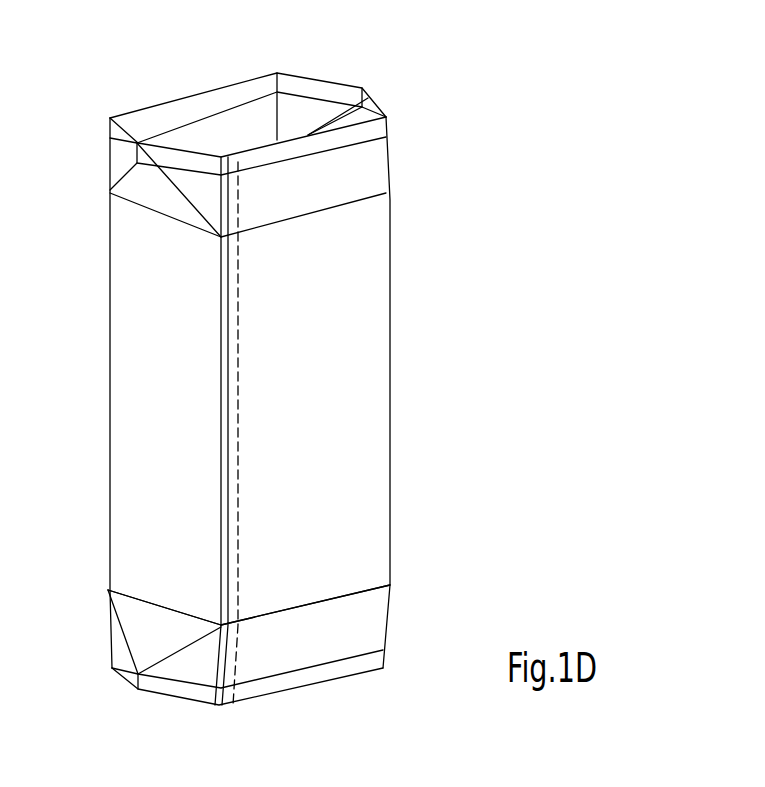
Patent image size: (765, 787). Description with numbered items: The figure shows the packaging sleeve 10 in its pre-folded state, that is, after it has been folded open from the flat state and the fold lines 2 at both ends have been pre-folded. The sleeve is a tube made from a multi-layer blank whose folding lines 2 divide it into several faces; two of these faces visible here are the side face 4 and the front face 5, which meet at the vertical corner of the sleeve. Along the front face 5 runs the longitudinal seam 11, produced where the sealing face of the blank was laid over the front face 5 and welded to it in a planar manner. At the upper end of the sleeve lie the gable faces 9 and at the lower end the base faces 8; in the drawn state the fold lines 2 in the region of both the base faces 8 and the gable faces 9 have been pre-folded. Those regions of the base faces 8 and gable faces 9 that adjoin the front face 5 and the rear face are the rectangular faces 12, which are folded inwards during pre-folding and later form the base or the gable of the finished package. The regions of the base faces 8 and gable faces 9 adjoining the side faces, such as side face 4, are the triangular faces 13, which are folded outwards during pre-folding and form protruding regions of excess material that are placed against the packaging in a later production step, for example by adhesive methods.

The folding lines 2 is at (110, 140).
The second side face 4 is at (154, 406).
The front face 5 is at (304, 391).
The base faces 8 is at (155, 628).
The gable faces 9 is at (155, 193).
The packaging sleeve 10 is at (281, 390).
The longitudinal seam 11 is at (233, 435).
The rectangular faces 12 is at (245, 117).
The triangular faces 13 is at (145, 185).